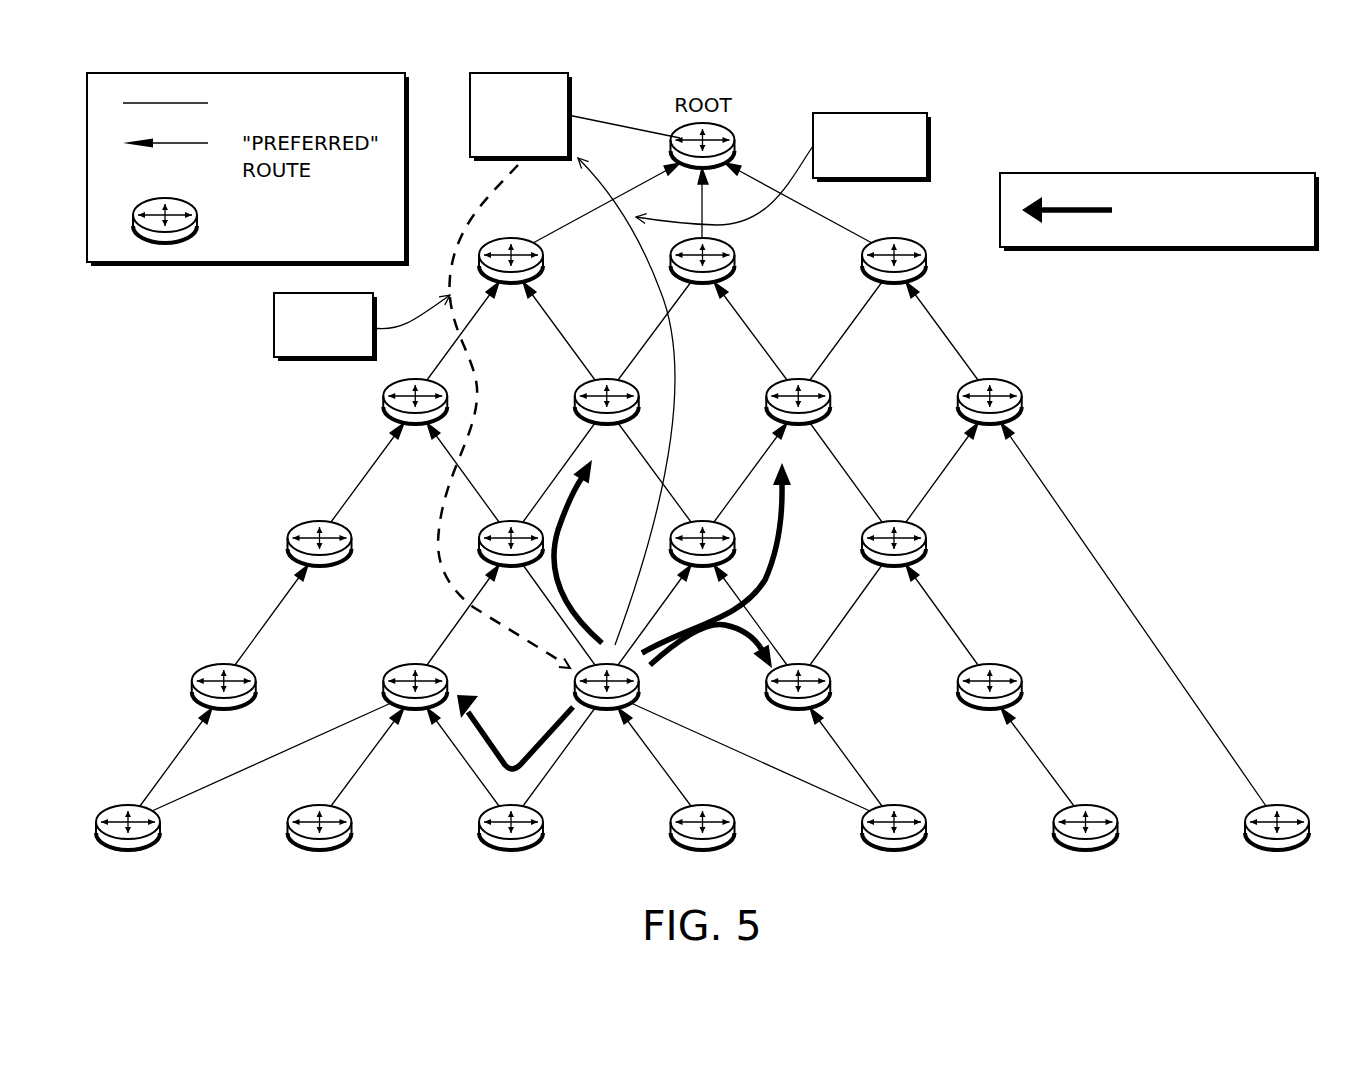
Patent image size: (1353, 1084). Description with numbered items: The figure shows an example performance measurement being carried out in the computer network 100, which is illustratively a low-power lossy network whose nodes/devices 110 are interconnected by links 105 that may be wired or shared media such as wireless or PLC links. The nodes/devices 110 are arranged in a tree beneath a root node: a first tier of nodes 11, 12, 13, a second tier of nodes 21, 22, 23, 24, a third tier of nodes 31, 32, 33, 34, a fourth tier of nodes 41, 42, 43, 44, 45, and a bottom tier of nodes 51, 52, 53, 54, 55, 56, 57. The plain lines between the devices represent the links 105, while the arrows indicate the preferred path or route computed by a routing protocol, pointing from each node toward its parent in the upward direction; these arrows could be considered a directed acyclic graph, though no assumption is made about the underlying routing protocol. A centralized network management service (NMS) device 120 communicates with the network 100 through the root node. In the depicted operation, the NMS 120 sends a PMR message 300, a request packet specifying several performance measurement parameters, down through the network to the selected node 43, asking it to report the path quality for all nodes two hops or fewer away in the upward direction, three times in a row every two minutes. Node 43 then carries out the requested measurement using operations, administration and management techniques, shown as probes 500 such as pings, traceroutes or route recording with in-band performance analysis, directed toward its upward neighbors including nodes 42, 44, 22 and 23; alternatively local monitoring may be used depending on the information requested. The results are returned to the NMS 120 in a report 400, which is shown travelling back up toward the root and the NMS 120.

The computer network 100 is at (1212, 130).
The links 105 is at (233, 103).
The nodes/devices 110 is at (247, 220).
The network management service (NMS) device 120 is at (504, 139).
The PMR message 300 is at (308, 350).
The report 400 is at (855, 172).
The probes 500 is at (1159, 212).
The node 11 is at (511, 278).
The node 12 is at (703, 278).
The node 13 is at (894, 278).
The node 21 is at (415, 419).
The node 22 is at (607, 419).
The node 23 is at (798, 419).
The node 24 is at (990, 419).
The node 31 is at (320, 561).
The node 32 is at (511, 561).
The node 33 is at (703, 561).
The node 34 is at (894, 561).
The node 41 is at (224, 704).
The node 42 is at (415, 704).
The node 43 is at (607, 704).
The node 44 is at (798, 704).
The node 45 is at (990, 704).
The node 51 is at (128, 845).
The node 52 is at (320, 845).
The node 53 is at (511, 845).
The node 54 is at (703, 845).
The node 55 is at (894, 845).
The node 56 is at (1086, 845).
The node 57 is at (1277, 845).